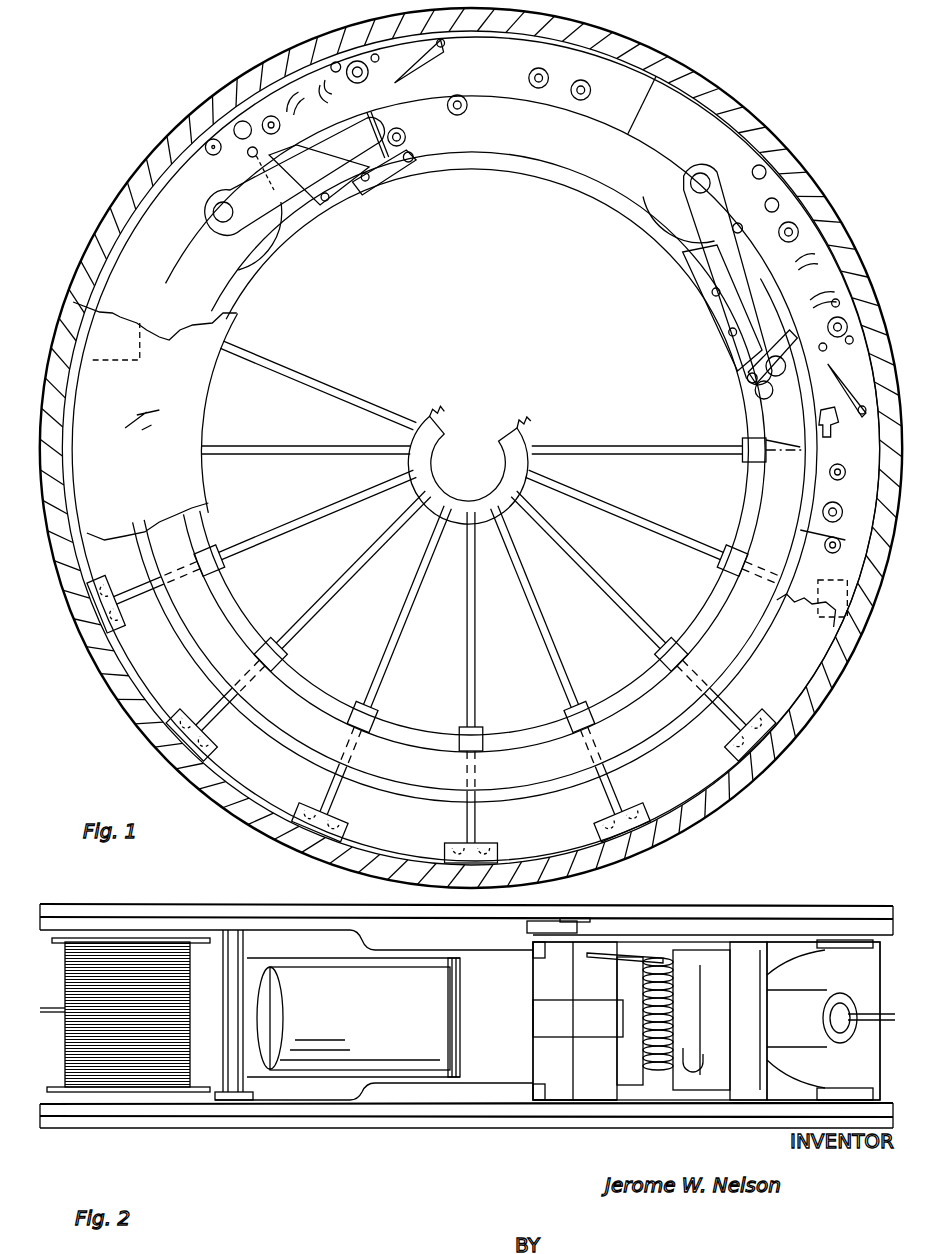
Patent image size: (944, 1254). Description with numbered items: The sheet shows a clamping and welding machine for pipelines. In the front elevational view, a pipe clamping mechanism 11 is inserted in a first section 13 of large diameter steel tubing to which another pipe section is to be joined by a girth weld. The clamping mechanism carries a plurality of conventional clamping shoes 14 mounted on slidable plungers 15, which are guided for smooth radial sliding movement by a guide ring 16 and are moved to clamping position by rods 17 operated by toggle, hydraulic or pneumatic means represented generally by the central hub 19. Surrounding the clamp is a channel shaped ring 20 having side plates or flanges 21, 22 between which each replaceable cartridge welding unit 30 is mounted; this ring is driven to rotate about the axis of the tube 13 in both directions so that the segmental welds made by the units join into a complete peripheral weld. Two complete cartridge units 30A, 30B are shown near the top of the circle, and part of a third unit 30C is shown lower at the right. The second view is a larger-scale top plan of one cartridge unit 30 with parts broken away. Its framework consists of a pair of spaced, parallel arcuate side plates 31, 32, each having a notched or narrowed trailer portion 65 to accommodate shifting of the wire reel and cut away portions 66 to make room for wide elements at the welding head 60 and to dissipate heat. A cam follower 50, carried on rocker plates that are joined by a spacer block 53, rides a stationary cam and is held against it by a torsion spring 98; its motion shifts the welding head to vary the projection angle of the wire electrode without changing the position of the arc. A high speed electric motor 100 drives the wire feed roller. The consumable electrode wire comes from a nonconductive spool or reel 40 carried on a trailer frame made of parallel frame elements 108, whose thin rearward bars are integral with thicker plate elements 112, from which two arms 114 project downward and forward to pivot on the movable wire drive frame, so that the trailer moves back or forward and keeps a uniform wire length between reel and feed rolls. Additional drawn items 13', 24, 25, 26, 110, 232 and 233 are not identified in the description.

In FIG. 1, the pipe clamping mechanism 11 is at (552, 420).
In FIG. 1, the first section of tubing 13 is at (471, 448).
In FIG. 2, the first section of tubing 13 is at (465, 913).
In FIG. 2, the lower housing plate 13' is at (466, 1134).
In FIG. 1, the clamping shoes 14 is at (126, 626).
In FIG. 1, the slidable plungers 15 is at (742, 465).
In FIG. 1, the guide ring 16 is at (542, 775).
In FIG. 1, the rods 17 is at (588, 572).
In FIG. 1, the hub 19 is at (488, 498).
In FIG. 1, the channel shaped ring 20 is at (318, 220).
In FIG. 1, the side plate or flange 21 is at (112, 328).
In FIG. 2, the side plate or flange 21 is at (372, 1128).
In FIG. 2, the side plate or flange 22 is at (220, 915).
In FIG. 1, the outer ring 24 is at (688, 732).
In FIG. 2, the mounting block 25 is at (850, 940).
In FIG. 2, the mounting block 26 is at (868, 1068).
In FIG. 2, the cartridge welding unit 30 is at (680, 923).
In FIG. 1, the cartridge welding unit 30A is at (440, 140).
In FIG. 1, the cartridge welding unit 30B is at (632, 165).
In FIG. 1, the cartridge welding unit 30C is at (800, 632).
In FIG. 2, the arcuate side plate 31 is at (645, 925).
In FIG. 1, the arcuate side plate 32 is at (504, 92).
In FIG. 2, the arcuate side plate 32 is at (478, 1118).
In FIG. 2, the wire supply reel 40 is at (80, 1020).
In FIG. 2, the cam follower 50 is at (588, 905).
In FIG. 2, the spacer block 53 is at (578, 1018).
In FIG. 2, the welding head 60 is at (812, 1000).
In FIG. 1, the trailer portion 65 is at (143, 218).
In FIG. 1, the cut away portion 66 is at (445, 60).
In FIG. 2, the torsion spring 98 is at (675, 1020).
In FIG. 2, the electric motor 100 is at (268, 1017).
In FIG. 2, the trailer frame elements 108 is at (248, 960).
In FIG. 2, the coil 110 is at (120, 935).
In FIG. 2, the plate elements 112 is at (285, 935).
In FIG. 2, the arms 114 is at (533, 985).
In FIG. 2, the lower support 232 is at (595, 1095).
In FIG. 2, the upper support 233 is at (548, 985).